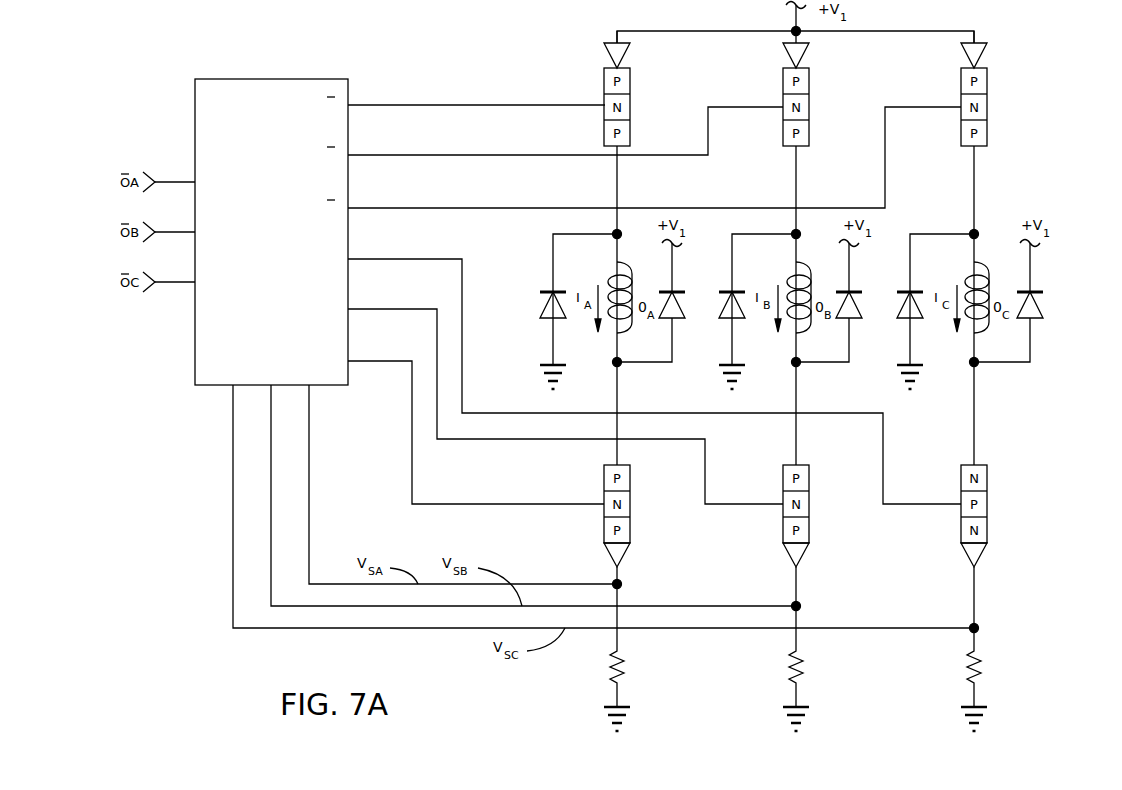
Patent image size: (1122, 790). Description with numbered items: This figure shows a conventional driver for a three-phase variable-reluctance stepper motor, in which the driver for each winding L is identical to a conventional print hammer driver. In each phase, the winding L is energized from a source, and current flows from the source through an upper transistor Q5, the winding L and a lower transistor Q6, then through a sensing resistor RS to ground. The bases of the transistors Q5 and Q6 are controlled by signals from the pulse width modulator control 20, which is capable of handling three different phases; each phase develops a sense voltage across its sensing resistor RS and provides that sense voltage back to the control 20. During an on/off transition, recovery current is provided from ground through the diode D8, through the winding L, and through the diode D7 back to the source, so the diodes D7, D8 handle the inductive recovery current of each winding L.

The pulse width modulator control 20 is at (298, 78).
The transistor Q5 is at (632, 117).
The transistor Q6 is at (630, 510).
The diode D7 is at (680, 310).
The diode D8 is at (543, 310).
The winding L is at (630, 284).
The sensing resistor RS is at (997, 665).